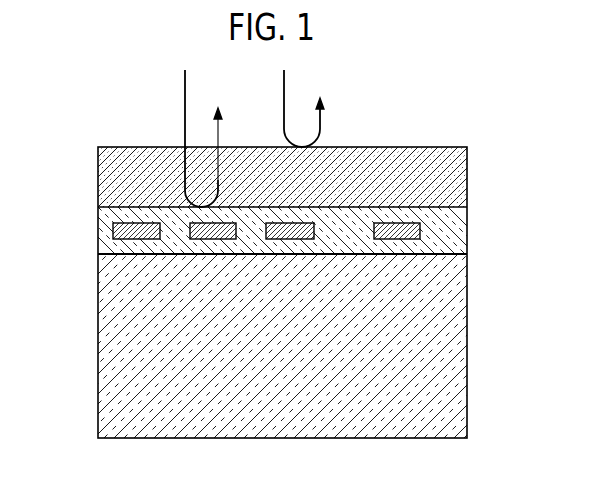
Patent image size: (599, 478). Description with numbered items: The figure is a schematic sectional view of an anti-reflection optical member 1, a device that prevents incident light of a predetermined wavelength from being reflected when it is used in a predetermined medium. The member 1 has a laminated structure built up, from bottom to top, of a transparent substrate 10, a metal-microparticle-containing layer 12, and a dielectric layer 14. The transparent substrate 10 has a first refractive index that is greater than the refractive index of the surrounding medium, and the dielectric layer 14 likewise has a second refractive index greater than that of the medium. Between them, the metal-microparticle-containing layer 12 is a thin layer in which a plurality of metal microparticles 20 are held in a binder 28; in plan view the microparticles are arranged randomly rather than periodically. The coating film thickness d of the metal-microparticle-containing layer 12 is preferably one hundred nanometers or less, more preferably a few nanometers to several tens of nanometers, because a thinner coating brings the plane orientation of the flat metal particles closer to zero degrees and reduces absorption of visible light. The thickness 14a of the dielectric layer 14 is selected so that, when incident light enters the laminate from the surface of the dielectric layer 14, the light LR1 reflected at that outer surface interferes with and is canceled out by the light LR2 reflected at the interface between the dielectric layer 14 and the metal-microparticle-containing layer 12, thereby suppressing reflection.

The anti-reflection optical member 1 is at (493, 150).
The transparent substrate 10 is at (460, 350).
The metal-microparticle-containing layer 12 is at (478, 226).
The dielectric layer 14 is at (460, 181).
The thickness of the dielectric layer 14a is at (96, 147).
The metal microparticles 20 is at (207, 240).
The binder 28 is at (460, 240).
The coating film thickness of the metal-microparticle-containing layer d is at (96, 207).
The light reflected on the surface of the dielectric layer LR1 is at (322, 120).
The light reflected on the interface between the dielectric layer and the metal-micr LR2 is at (220, 128).